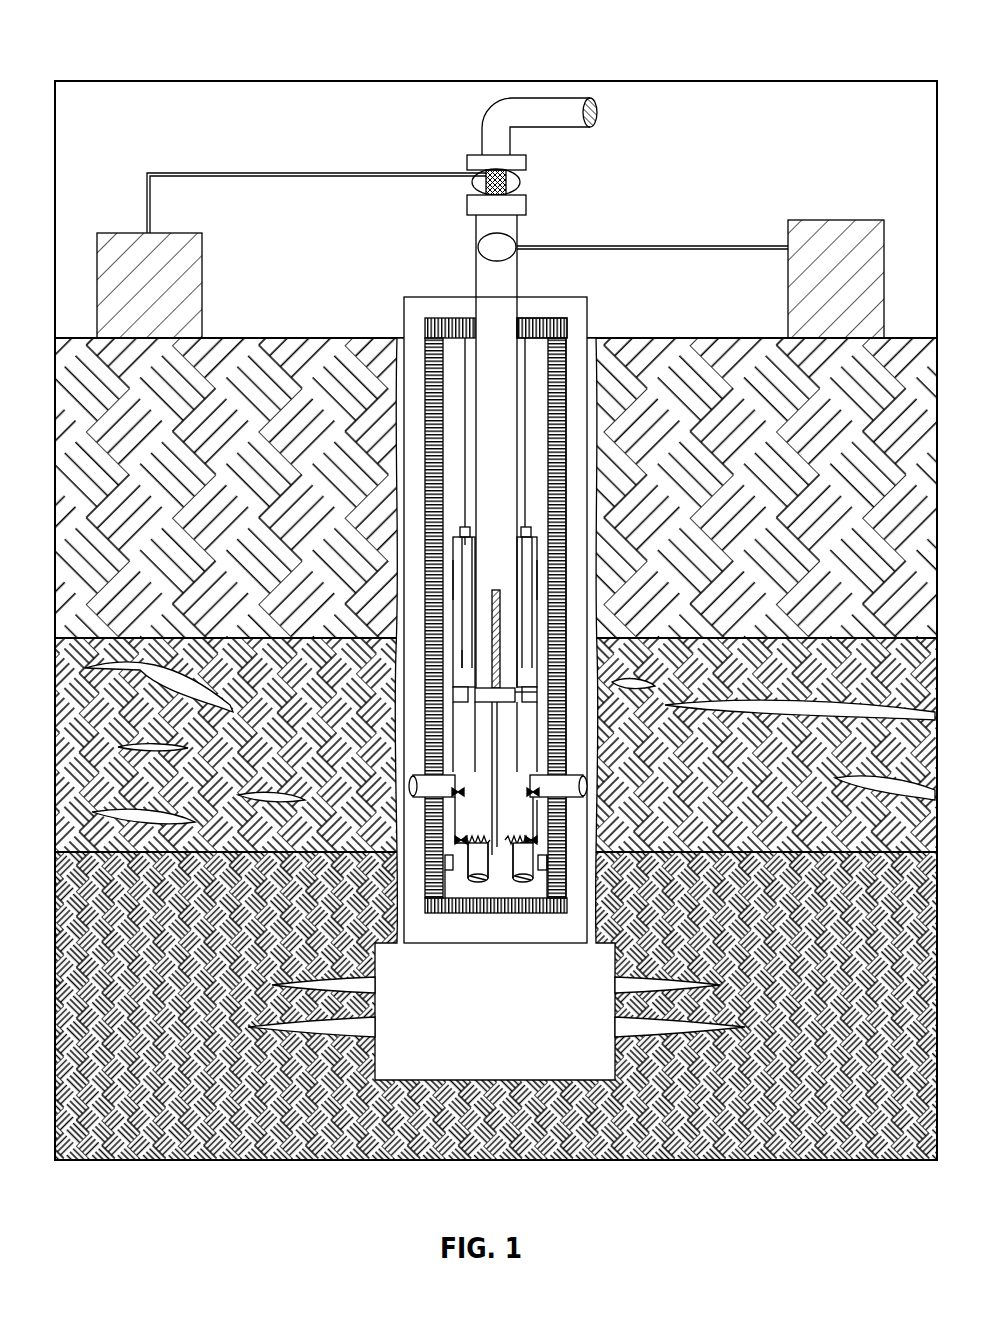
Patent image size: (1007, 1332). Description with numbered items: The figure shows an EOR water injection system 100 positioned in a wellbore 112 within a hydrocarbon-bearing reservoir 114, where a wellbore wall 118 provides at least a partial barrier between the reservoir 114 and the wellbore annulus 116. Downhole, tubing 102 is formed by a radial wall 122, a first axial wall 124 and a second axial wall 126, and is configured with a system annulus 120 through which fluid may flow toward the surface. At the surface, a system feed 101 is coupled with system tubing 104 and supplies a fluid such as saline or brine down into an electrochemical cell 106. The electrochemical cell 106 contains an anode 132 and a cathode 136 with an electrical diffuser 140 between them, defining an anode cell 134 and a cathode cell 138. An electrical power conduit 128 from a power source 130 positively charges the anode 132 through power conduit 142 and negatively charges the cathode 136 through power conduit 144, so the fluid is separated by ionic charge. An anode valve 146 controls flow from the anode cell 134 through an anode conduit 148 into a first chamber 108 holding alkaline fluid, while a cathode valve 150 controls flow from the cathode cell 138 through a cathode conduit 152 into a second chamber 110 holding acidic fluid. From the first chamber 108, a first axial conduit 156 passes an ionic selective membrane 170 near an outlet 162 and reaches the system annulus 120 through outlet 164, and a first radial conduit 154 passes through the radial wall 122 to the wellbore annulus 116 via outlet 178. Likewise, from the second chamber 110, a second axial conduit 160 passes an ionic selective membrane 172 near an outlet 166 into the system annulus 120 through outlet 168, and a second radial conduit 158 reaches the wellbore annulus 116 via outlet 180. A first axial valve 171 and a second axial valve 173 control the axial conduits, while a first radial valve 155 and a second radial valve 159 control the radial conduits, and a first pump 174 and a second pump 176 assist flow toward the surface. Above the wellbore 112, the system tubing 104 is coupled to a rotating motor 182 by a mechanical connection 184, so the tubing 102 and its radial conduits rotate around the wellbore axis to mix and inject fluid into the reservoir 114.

The EOR water injection system 100 is at (118, 38).
The system feed 101 is at (605, 109).
The tubing 102 is at (440, 322).
The system tubing 104 is at (520, 262).
The electrochemical cell 106 is at (560, 548).
The first chamber 108 is at (455, 768).
The second chamber 110 is at (522, 760).
The wellbore 112 is at (398, 372).
The hydrocarbon-bearing reservoir 114 is at (132, 626).
The wellbore annulus 116 is at (430, 580).
The wellbore wall 118 is at (555, 297).
The system annulus 120 is at (443, 483).
The radial wall 122 is at (538, 403).
The first axial wall 124 is at (548, 326).
The second axial wall 126 is at (542, 880).
The electrical power conduit 128 is at (250, 173).
The power source 130 is at (135, 233).
The anode 132 is at (462, 548).
The anode cell 134 is at (470, 660).
The cathode 136 is at (537, 580).
The cathode cell 138 is at (500, 598).
The electrical diffuser 140 is at (470, 568).
The power conduit 142 is at (455, 468).
The power conduit 144 is at (525, 463).
The anode valve 146 is at (458, 683).
The anode conduit 148 is at (470, 720).
The cathode valve 150 is at (510, 684).
The cathode conduit 152 is at (520, 695).
The first radial conduit 154 is at (455, 818).
The first radial valve 155 is at (496, 702).
The first axial conduit 156 is at (475, 882).
The second radial conduit 158 is at (547, 815).
The second radial valve 159 is at (548, 795).
The second axial conduit 160 is at (530, 920).
The outlet 162 is at (447, 890).
The outlet 164 is at (493, 860).
The outlet 166 is at (546, 862).
The outlet 168 is at (522, 882).
The ionic selective membrane 170 is at (465, 912).
The first axial valve 171 is at (455, 840).
The ionic selective membrane 172 is at (490, 870).
The second axial valve 173 is at (536, 838).
The first pump 174 is at (445, 862).
The second pump 176 is at (540, 880).
The outlet 178 is at (410, 787).
The outlet 180 is at (586, 787).
The rotating motor 182 is at (845, 220).
The mechanical connection 184 is at (480, 240).